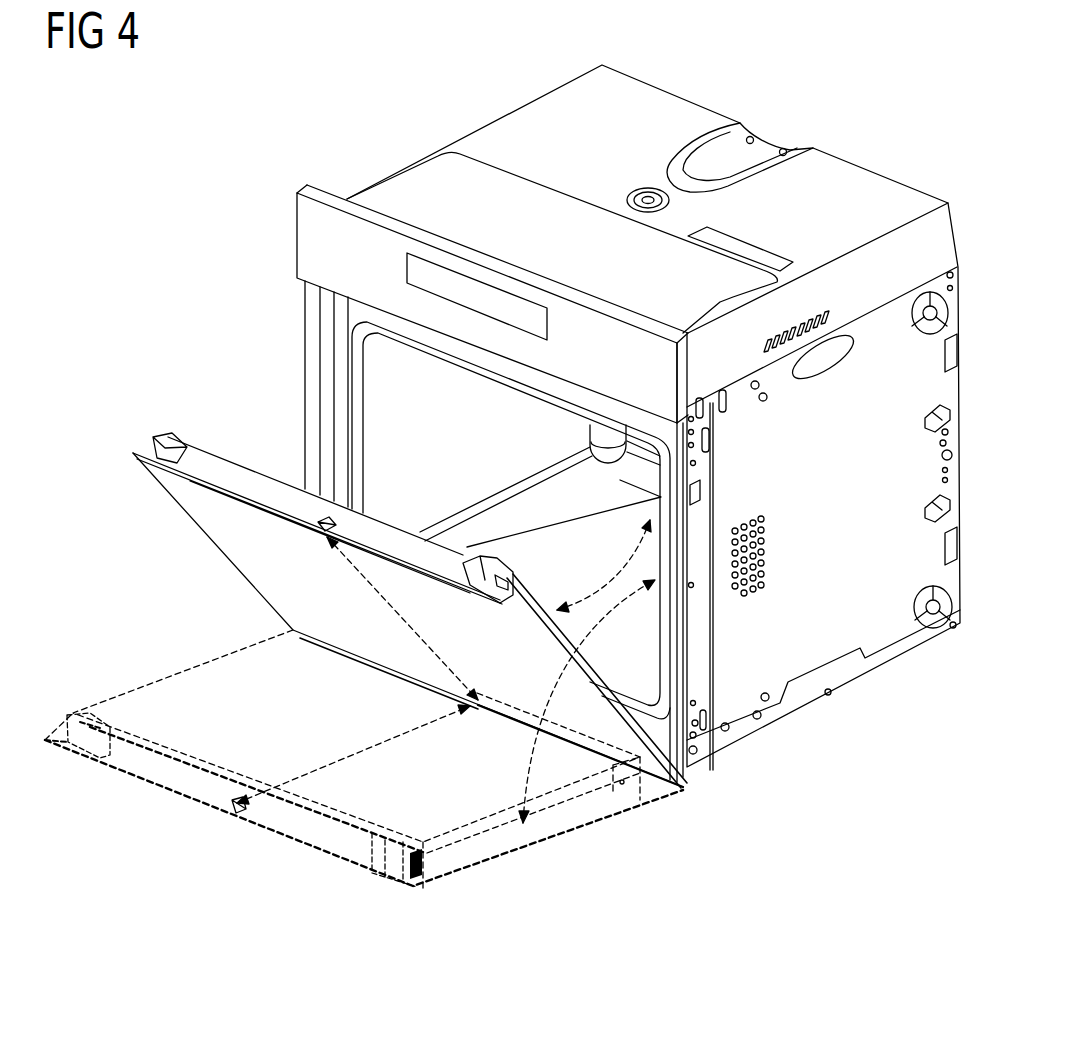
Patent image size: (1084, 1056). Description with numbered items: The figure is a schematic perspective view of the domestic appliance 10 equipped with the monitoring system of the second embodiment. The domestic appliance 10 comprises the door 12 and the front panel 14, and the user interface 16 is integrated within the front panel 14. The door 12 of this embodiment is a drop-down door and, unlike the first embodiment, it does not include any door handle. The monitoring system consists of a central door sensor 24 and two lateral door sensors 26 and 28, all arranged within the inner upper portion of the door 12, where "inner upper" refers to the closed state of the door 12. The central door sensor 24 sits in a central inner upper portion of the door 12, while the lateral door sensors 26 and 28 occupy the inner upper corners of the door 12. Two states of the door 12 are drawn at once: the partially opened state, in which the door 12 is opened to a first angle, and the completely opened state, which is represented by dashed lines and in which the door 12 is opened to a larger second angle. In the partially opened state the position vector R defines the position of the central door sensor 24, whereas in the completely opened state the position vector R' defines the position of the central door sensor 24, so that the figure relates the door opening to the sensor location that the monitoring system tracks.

The domestic appliance 10 is at (852, 75).
The door 12 is at (620, 728).
The front panel 14 is at (316, 213).
The user interface 16 is at (410, 265).
The central door sensor 24 is at (318, 528).
The lateral door sensor 26 is at (158, 457).
The lateral door sensor 28 is at (490, 585).
The position vector R is at (402, 618).
The position vector R' is at (353, 747).